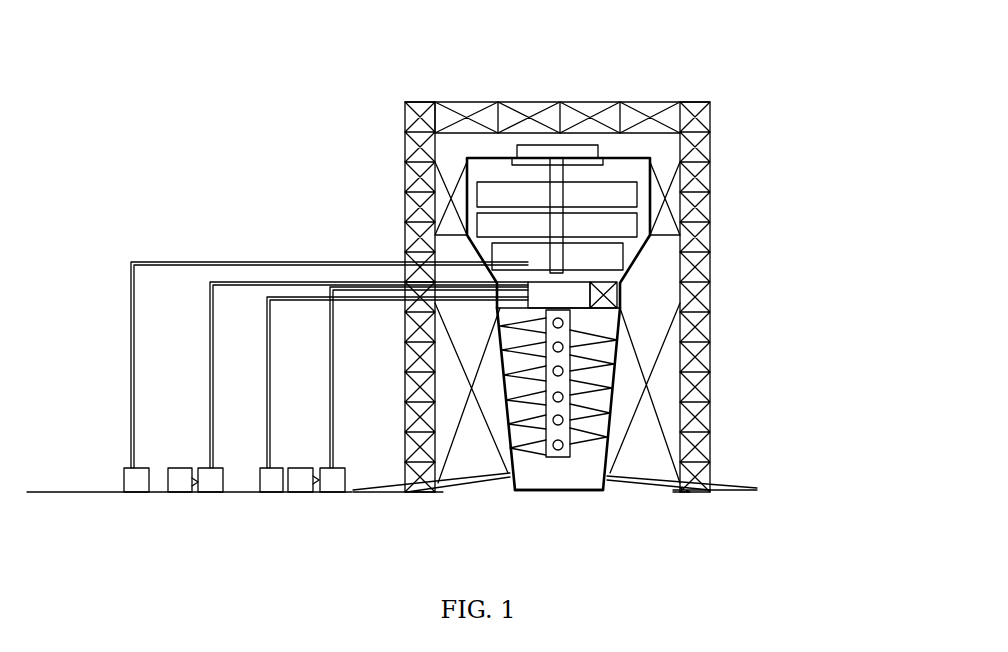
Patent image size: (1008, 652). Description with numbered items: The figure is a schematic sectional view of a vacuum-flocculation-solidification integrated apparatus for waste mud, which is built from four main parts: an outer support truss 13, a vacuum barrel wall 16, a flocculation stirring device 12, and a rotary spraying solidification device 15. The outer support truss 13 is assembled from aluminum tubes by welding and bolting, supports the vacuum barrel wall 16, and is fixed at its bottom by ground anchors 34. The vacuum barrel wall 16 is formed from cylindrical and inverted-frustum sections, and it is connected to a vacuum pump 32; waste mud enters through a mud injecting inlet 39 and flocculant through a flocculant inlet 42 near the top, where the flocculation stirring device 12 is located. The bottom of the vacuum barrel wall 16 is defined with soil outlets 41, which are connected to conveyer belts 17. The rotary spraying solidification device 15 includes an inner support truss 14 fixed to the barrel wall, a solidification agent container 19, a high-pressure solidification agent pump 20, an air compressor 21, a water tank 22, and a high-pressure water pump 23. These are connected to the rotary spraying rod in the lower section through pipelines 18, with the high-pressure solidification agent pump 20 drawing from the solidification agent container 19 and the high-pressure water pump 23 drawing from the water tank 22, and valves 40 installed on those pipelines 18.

The flocculation stirring device 12 is at (632, 157).
The outer support truss 13 is at (710, 240).
The inner support truss 14 is at (618, 300).
The rotary spraying solidification device 15 is at (617, 340).
The vacuum barrel wall 16 is at (610, 452).
The conveyer belt 17 is at (750, 487).
The pipeline 18 is at (357, 287).
The solidification agent container 19 is at (168, 493).
The high-pressure solidification agent pump 20 is at (198, 493).
The air compressor 21 is at (260, 493).
The water tank 22 is at (288, 493).
The high-pressure water pump 23 is at (320, 493).
The vacuum pump 32 is at (124, 486).
The ground anchor 34 is at (717, 492).
The mud injecting inlet 39 is at (620, 160).
The valve 40 is at (317, 480).
The soil outlet 41 is at (593, 492).
The flocculant inlet 42 is at (495, 158).